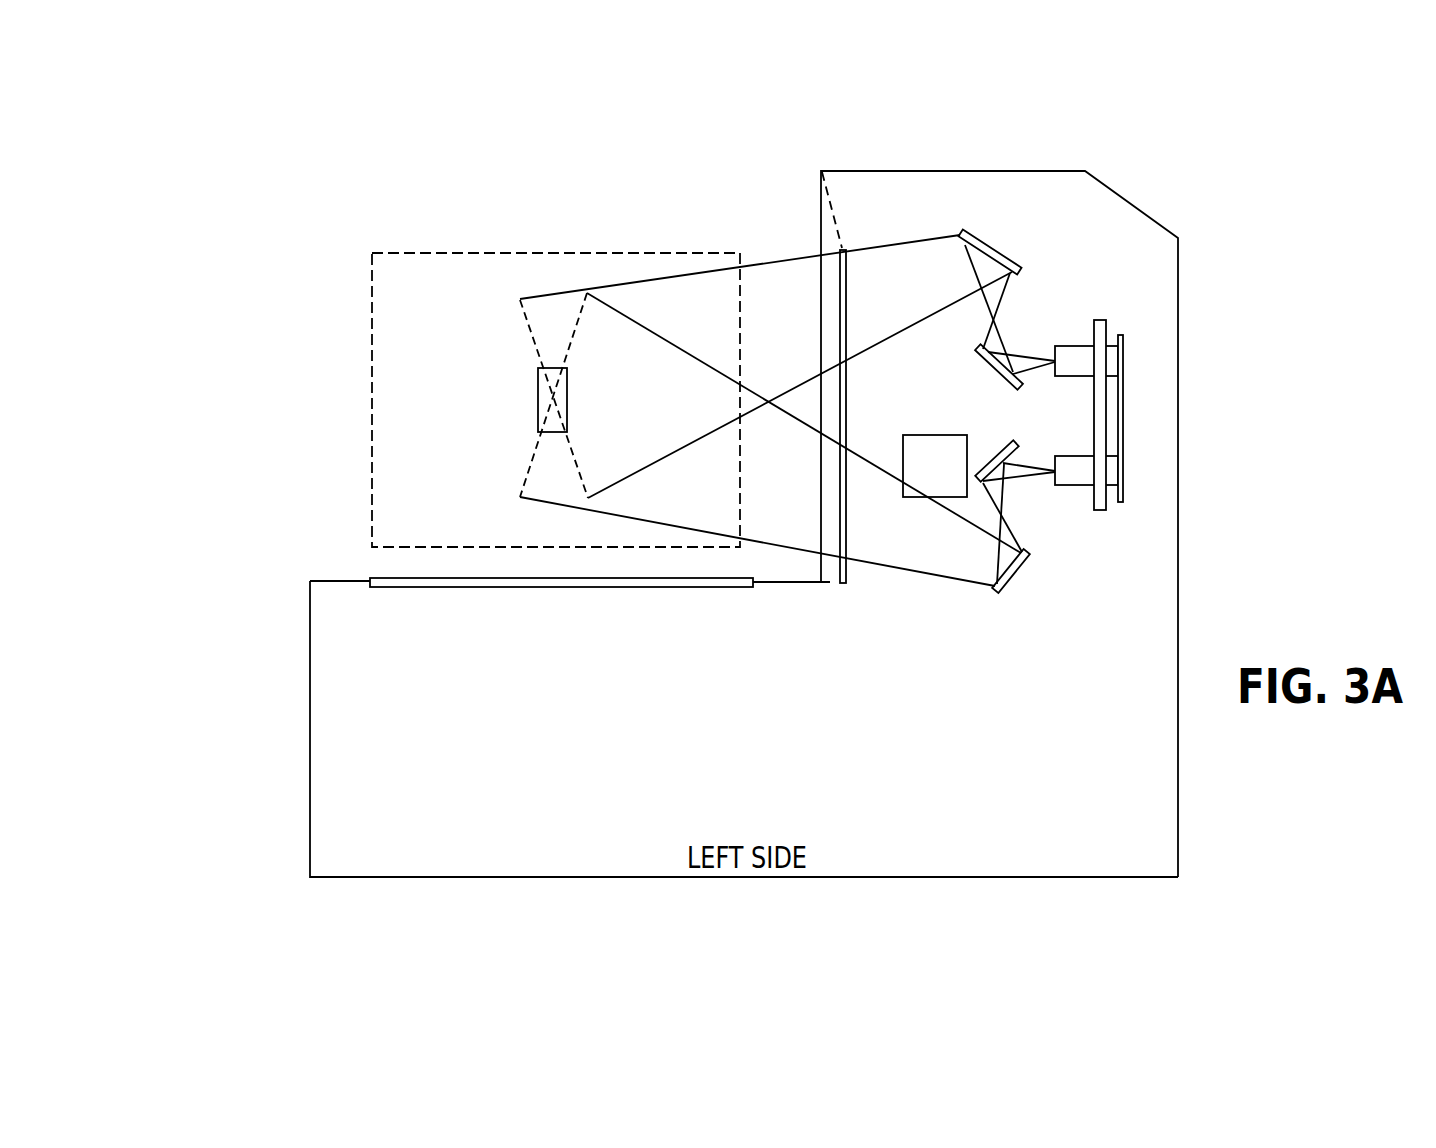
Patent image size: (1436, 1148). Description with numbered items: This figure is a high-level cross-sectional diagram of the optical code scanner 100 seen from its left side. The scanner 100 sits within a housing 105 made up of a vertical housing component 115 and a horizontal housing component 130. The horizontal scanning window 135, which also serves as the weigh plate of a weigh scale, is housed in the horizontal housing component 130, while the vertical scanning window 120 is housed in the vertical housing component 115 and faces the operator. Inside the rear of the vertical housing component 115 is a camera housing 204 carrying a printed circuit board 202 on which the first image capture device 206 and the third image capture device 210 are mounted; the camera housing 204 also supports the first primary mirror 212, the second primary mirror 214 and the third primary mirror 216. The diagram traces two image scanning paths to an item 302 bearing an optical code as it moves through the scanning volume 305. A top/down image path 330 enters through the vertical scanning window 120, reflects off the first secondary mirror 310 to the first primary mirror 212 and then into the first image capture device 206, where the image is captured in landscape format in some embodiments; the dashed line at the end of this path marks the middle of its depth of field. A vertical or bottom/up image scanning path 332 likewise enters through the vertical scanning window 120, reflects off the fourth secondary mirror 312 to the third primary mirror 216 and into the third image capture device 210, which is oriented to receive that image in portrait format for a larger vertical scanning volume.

The scanner 100 is at (272, 108).
The housing 105 is at (352, 851).
The vertical housing component 115 is at (873, 170).
The vertical scanning window 120 is at (847, 251).
The horizontal housing component 130 is at (318, 580).
The horizontal scanning window 135 is at (375, 578).
The printed circuit board 202 is at (1125, 410).
The camera housing 204 is at (1107, 327).
The first image capture device 206 is at (1080, 359).
The third image capture device 210 is at (1080, 471).
The first primary mirror 212 is at (985, 366).
The second primary mirror 214 is at (903, 452).
The third primary mirror 216 is at (985, 460).
The item 302 is at (538, 393).
The scanning volume 305 is at (462, 252).
The first secondary mirror 310 is at (993, 247).
The fourth secondary mirror 312 is at (1015, 580).
The top/down image path 330 is at (787, 275).
The vertical or bottom/up image scanning path 332 is at (911, 563).